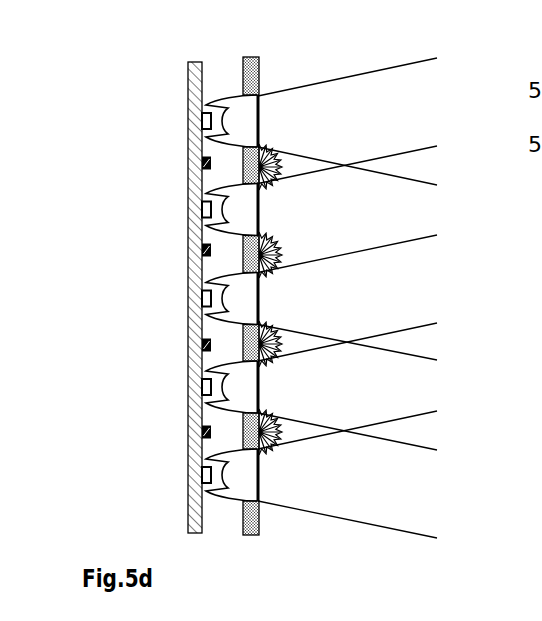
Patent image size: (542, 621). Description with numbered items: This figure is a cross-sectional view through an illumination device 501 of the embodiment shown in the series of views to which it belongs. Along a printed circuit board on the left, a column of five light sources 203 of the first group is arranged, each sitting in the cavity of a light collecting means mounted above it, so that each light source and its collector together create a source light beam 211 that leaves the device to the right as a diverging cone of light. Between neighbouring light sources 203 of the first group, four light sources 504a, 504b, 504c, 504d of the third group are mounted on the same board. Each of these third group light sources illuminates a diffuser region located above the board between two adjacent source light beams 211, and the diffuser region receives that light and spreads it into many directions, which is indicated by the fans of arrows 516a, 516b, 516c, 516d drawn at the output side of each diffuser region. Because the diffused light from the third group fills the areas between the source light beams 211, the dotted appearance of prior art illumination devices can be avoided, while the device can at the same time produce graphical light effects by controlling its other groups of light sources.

The light source module 501 is at (314, 29).
The first group of light sources 203 is at (202, 124).
The third group light source 504a is at (203, 160).
The third group light source 504b is at (203, 249).
The third group light source 504c is at (203, 345).
The third group light source 504d is at (203, 432).
The arrows 516a is at (280, 157).
The arrows 516b is at (282, 243).
The arrows 516c is at (283, 330).
The arrows 516d is at (283, 417).
The source light beams 211 is at (354, 298).